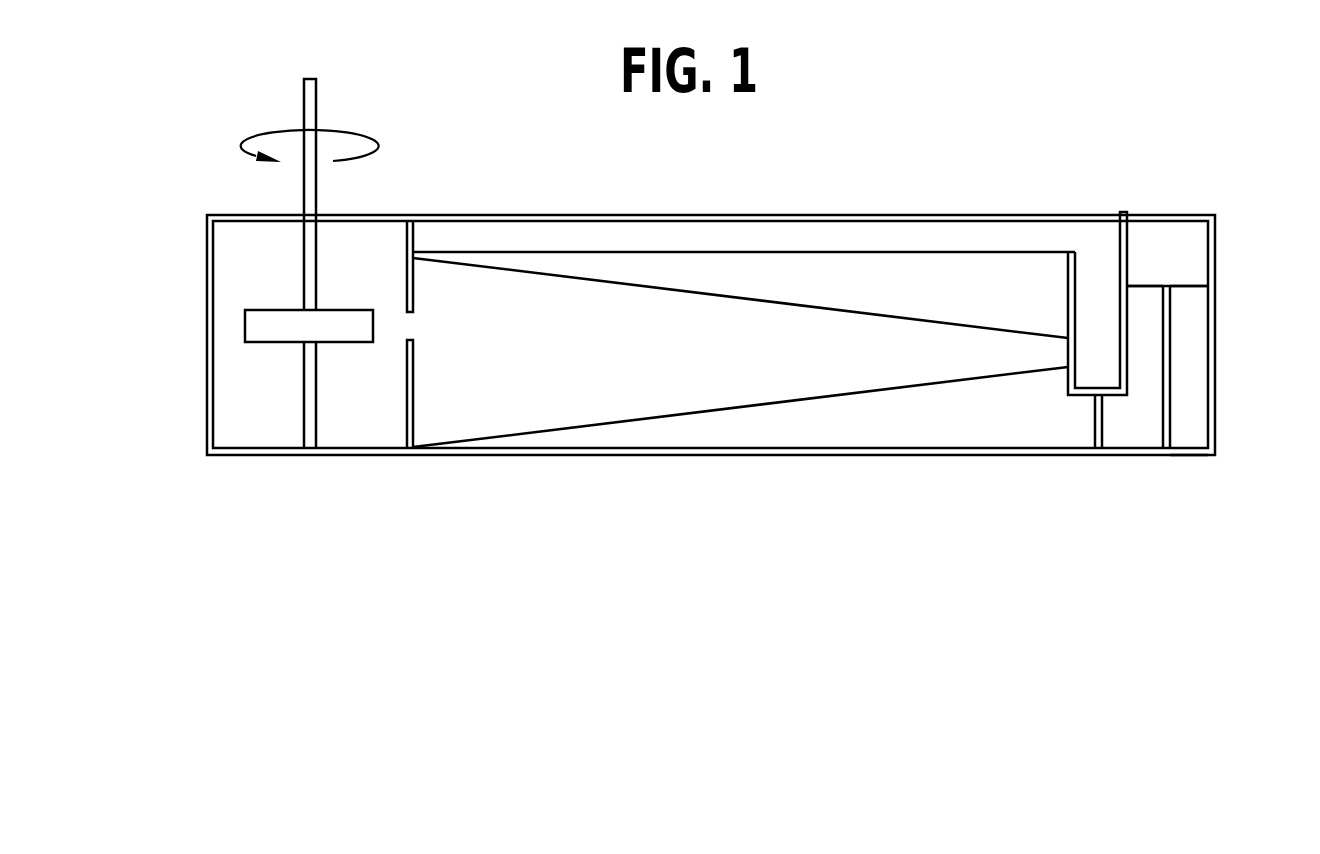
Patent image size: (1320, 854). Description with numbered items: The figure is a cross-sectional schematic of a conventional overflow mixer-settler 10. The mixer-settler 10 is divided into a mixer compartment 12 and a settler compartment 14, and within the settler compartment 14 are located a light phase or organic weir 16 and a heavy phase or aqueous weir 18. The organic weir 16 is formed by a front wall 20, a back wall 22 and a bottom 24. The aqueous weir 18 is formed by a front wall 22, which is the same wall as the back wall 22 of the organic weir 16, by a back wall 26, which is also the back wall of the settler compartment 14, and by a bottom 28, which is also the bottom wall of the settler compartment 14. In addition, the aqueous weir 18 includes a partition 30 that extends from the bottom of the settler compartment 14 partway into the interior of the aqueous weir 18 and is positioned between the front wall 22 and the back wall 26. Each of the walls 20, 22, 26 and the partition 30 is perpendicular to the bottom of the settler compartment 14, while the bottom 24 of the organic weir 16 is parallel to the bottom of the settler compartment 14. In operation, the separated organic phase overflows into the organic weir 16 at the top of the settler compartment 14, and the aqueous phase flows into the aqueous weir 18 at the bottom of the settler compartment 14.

The mixer-settler 10 is at (1219, 168).
The mixer compartment 12 is at (238, 383).
The settler compartment 14 is at (535, 215).
The organic weir 16 is at (1083, 270).
The aqueous weir 18 is at (1195, 262).
The front wall 20 is at (1068, 355).
The back wall 22 is at (1130, 380).
The bottom 24 is at (1088, 397).
The back wall 26 is at (1215, 418).
The bottom 28 is at (1200, 455).
The partition 30 is at (1168, 370).